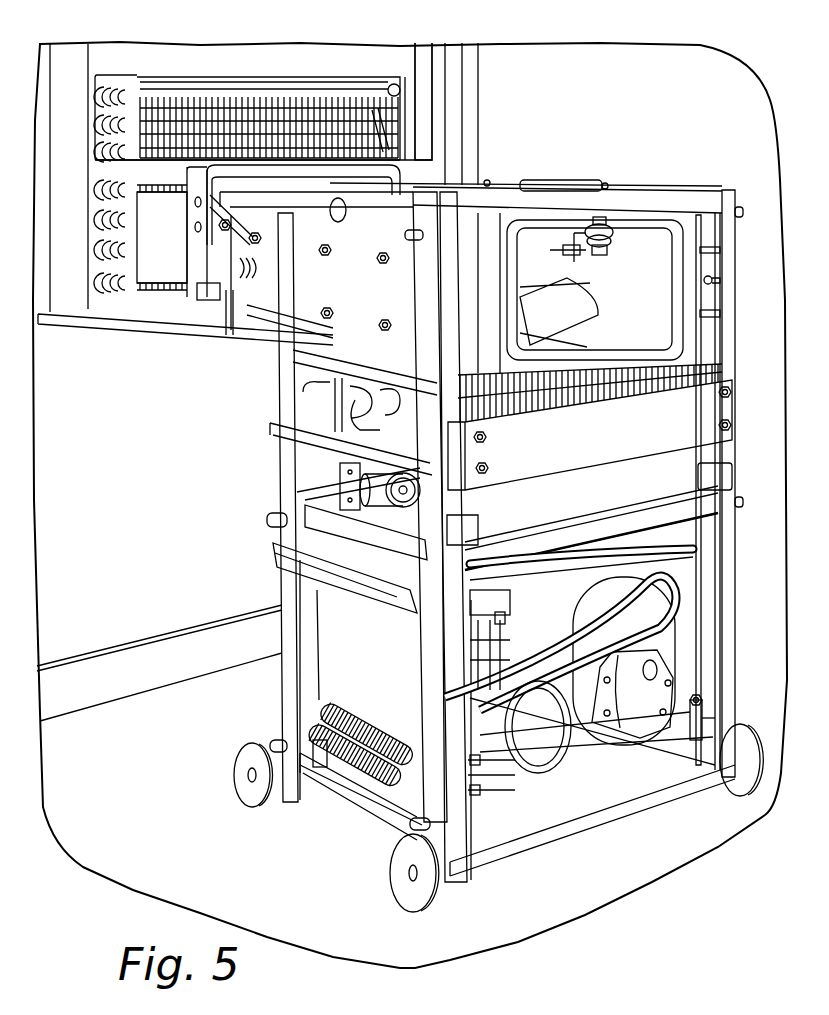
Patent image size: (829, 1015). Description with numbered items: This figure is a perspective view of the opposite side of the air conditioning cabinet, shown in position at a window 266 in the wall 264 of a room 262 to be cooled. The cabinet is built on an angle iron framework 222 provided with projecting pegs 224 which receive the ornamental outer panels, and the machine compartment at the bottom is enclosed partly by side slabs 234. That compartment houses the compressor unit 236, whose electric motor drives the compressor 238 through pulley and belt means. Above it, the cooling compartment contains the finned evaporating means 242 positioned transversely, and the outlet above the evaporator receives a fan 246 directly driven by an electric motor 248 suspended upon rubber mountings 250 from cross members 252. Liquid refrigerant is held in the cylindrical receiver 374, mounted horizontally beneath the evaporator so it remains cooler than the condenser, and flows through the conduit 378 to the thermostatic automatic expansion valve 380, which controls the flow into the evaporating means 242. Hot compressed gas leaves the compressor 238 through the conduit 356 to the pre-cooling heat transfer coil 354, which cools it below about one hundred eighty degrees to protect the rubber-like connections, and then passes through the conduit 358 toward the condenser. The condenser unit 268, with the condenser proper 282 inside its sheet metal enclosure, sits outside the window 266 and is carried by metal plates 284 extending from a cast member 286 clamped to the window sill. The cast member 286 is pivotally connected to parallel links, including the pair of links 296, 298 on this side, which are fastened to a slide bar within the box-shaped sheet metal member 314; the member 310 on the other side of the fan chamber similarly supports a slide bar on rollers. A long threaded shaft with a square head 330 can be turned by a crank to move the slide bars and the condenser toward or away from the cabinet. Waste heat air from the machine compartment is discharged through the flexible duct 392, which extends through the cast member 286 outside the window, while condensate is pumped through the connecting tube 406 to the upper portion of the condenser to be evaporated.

The angle iron framework 222 is at (433, 638).
The projecting pegs 224 is at (280, 743).
The side slabs 234 is at (688, 578).
The compressor unit 236 is at (658, 642).
The compressor 238 is at (477, 713).
The finned evaporating means 242 is at (580, 392).
The fan 246 is at (572, 316).
The electric motor 248 is at (535, 268).
The rubber mountings 250 is at (603, 246).
The cross members 252 is at (606, 194).
The room 262 is at (180, 760).
The wall 264 is at (718, 171).
The window 266 is at (435, 117).
The condenser unit 268 is at (115, 293).
The condenser proper 282 is at (265, 100).
The metal plates 284 is at (157, 270).
The cast member 286 is at (193, 243).
The link 296 is at (228, 300).
The link 298 is at (240, 305).
The box-shaped sheet metal member 310 is at (705, 322).
The box-shaped sheet metal member 314 is at (480, 297).
The square head 330 is at (712, 282).
The pre-cooling heat transfer coil 354 is at (374, 718).
The conduit 356 is at (508, 757).
The conduit 358 is at (552, 767).
The cylindrical receiver 374 is at (685, 463).
The conduit 378 is at (363, 385).
The thermostatic automatic expansion valve 380 is at (377, 484).
The flexible duct 392 is at (253, 274).
The connecting tube 406 is at (415, 133).